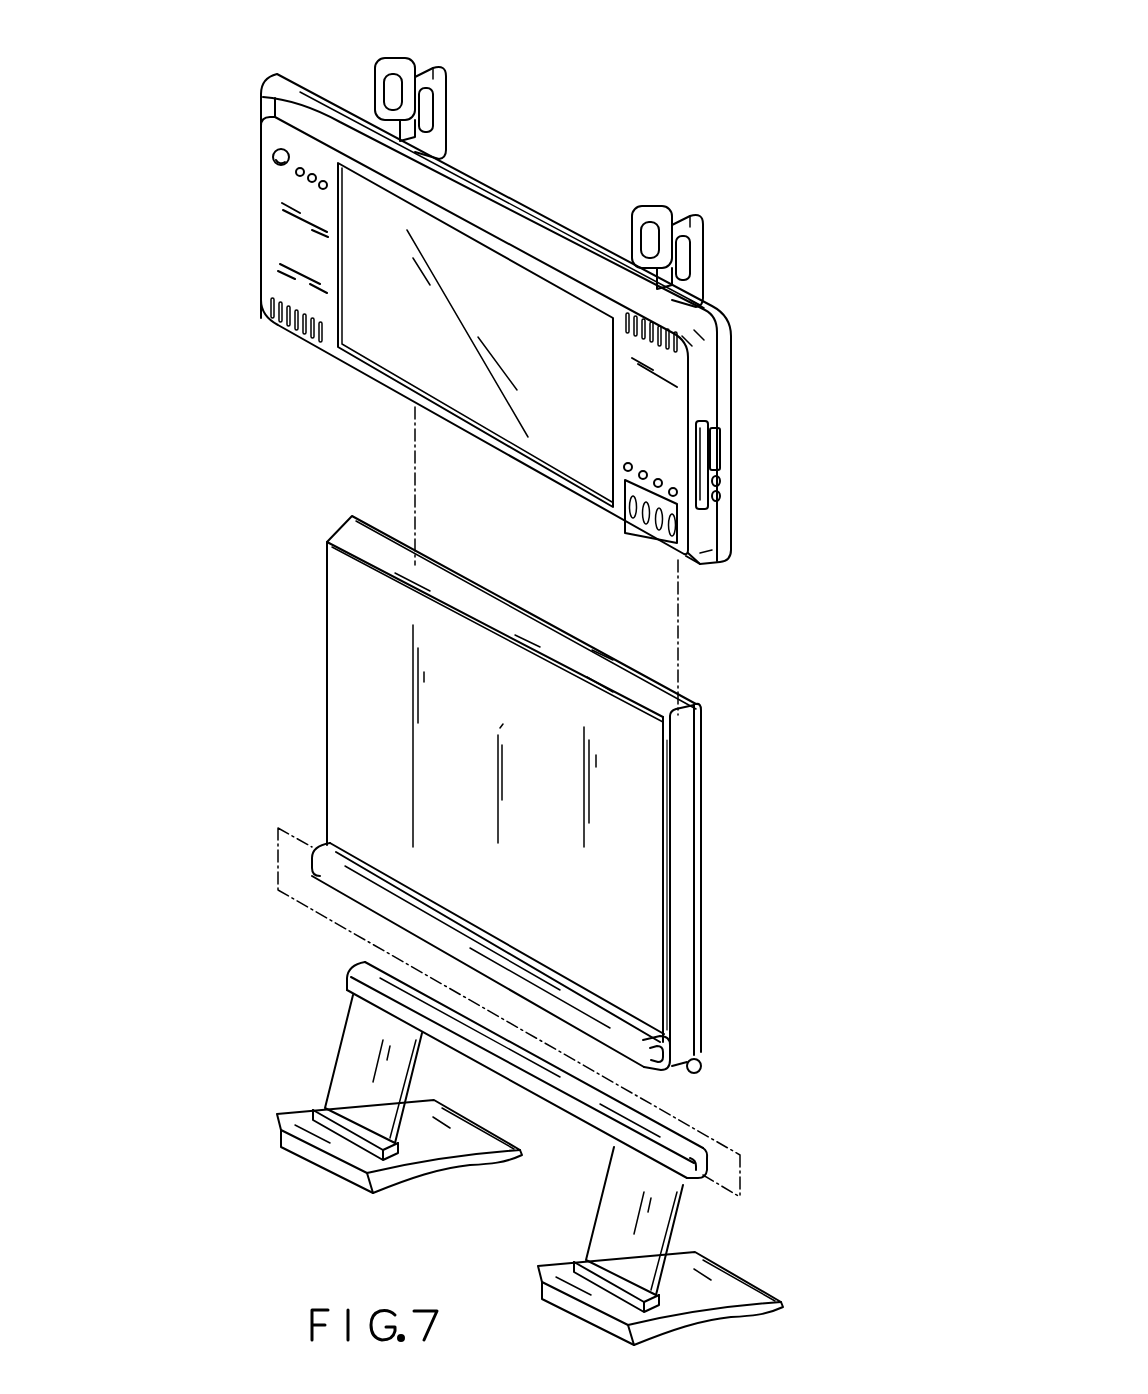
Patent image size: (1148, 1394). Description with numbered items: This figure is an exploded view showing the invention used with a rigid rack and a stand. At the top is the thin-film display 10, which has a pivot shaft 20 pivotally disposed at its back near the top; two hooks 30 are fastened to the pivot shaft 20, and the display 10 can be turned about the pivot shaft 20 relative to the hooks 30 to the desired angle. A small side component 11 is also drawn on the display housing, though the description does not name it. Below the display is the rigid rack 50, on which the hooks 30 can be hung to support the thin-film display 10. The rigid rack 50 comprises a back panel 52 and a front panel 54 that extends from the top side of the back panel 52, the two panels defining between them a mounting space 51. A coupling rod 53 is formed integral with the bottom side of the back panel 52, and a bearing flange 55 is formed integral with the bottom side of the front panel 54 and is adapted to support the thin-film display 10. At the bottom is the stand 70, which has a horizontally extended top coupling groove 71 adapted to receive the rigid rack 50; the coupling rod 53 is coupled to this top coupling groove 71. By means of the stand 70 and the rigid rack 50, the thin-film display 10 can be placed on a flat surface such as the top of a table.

The thin-film display 10 is at (485, 410).
The side switch 11 is at (720, 468).
The pivot shaft 20 is at (530, 319).
The hooks 30 is at (391, 62).
The rigid rack 50 is at (492, 816).
The mounting space 51 is at (664, 842).
The back panel 52 is at (686, 748).
The coupling rod 53 is at (700, 1074).
The front panel 54 is at (353, 625).
The bearing flange 55 is at (317, 845).
The stand 70 is at (510, 1128).
The top coupling groove 71 is at (363, 968).